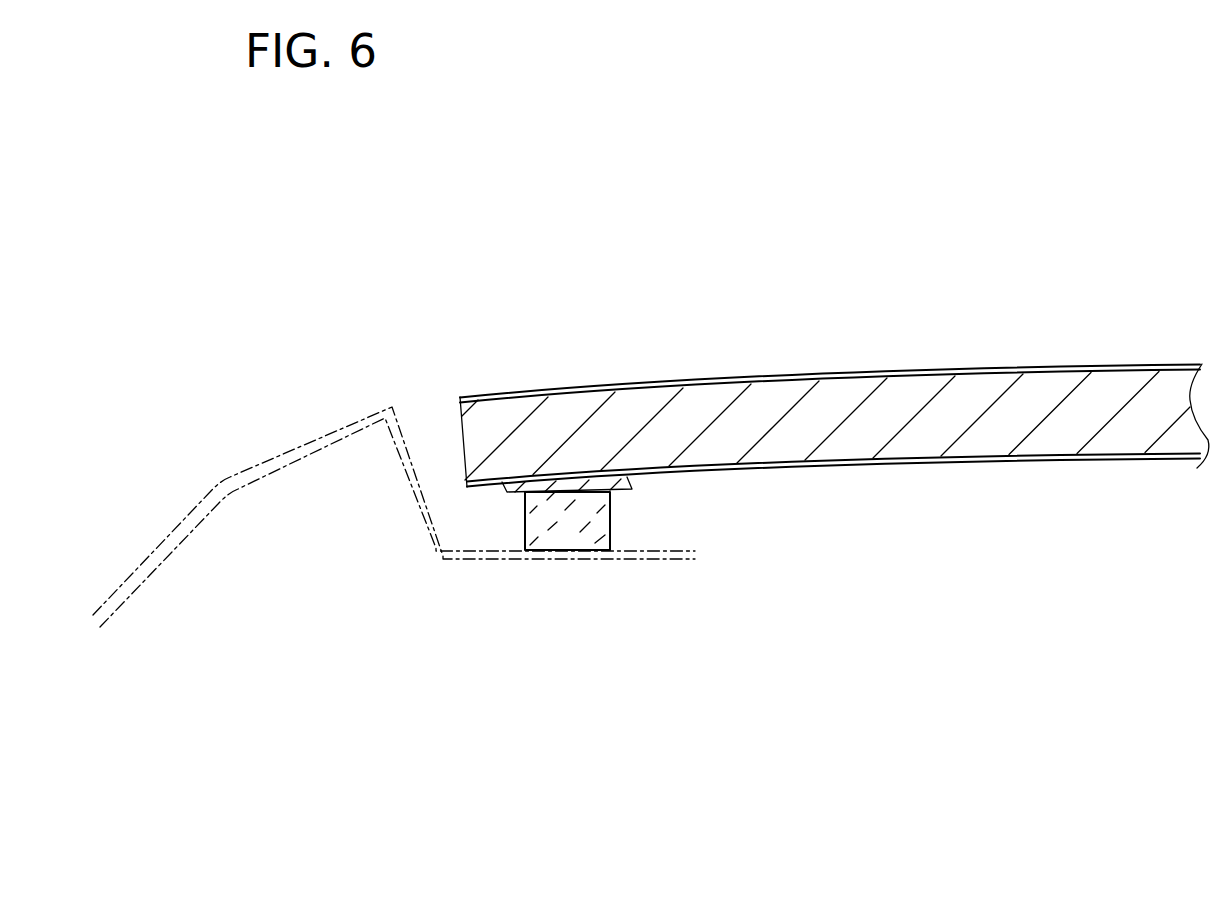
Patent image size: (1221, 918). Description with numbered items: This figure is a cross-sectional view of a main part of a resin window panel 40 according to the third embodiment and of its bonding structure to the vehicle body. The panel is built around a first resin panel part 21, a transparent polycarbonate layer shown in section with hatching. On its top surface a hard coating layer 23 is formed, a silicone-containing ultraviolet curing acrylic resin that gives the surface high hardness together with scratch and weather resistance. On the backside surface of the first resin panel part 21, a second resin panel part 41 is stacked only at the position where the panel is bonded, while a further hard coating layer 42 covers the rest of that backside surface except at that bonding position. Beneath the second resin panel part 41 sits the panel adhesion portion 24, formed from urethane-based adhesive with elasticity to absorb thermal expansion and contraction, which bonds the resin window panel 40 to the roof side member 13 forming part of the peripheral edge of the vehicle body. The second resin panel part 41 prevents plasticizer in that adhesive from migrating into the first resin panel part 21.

The roof side member 13 is at (327, 433).
The first resin panel part 21 is at (673, 348).
The hard coating layer 23 is at (810, 372).
The panel adhesion portion 24 is at (568, 535).
The resin window panel 40 is at (834, 379).
The second resin panel part 41 is at (700, 520).
The hard coating layer 42 is at (977, 458).